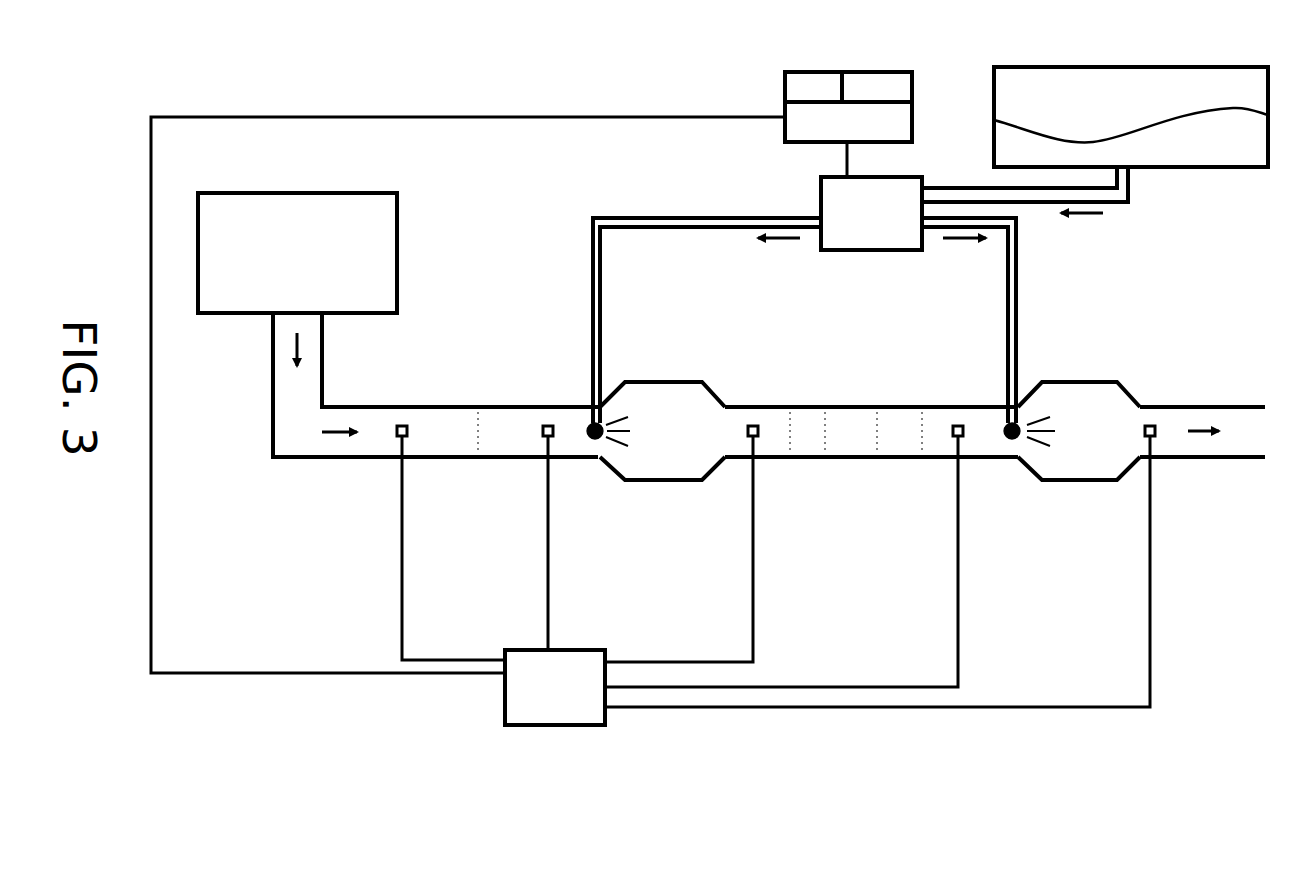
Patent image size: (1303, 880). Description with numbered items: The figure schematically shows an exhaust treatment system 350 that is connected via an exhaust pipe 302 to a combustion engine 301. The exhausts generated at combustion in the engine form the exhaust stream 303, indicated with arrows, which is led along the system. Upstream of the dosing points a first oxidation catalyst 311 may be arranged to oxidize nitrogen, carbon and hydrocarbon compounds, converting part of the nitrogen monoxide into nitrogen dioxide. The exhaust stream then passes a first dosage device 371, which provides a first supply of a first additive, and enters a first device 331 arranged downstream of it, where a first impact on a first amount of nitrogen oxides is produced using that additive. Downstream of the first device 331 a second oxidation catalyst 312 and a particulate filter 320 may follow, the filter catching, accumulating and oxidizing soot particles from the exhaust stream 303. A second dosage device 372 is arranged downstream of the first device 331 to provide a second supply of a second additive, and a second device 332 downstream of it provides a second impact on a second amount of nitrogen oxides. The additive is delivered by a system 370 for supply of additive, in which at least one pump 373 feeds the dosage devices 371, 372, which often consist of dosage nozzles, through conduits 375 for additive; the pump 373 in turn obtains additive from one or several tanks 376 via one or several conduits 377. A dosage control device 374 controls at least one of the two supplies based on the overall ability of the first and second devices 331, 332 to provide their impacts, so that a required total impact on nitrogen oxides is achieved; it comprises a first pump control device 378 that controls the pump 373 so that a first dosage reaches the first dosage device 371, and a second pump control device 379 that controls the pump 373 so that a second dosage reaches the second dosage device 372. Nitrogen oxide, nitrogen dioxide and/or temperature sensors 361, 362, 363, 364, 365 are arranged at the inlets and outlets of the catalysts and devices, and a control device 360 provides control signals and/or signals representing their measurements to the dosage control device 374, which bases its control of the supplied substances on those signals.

The combustion engine 301 is at (297, 253).
The exhaust pipe 302 is at (273, 386).
The exhaust stream 303 is at (338, 445).
The first oxidation catalyst 311 is at (452, 437).
The second oxidation catalyst 312 is at (800, 438).
The particulate filter 320 is at (898, 438).
The first device 331 is at (652, 462).
The second device 332 is at (1080, 462).
The exhaust treatment system 350 is at (1201, 566).
The control device 360 is at (555, 687).
The sensor 361 is at (550, 425).
The sensor 362 is at (752, 423).
The sensor 363 is at (956, 426).
The sensor 364 is at (1152, 426).
The sensor 365 is at (404, 425).
The system for supply of additive 370 is at (930, 230).
The first dosage device 371 is at (598, 441).
The second dosage device 372 is at (1012, 441).
The pump 373 is at (871, 213).
The dosage control device 374 is at (848, 107).
The conduits for additive 375 is at (778, 245).
The tank for additive 376 is at (1131, 117).
The conduit 377 is at (1132, 190).
The first pump control device 378 is at (817, 87).
The second pump control device 379 is at (877, 89).